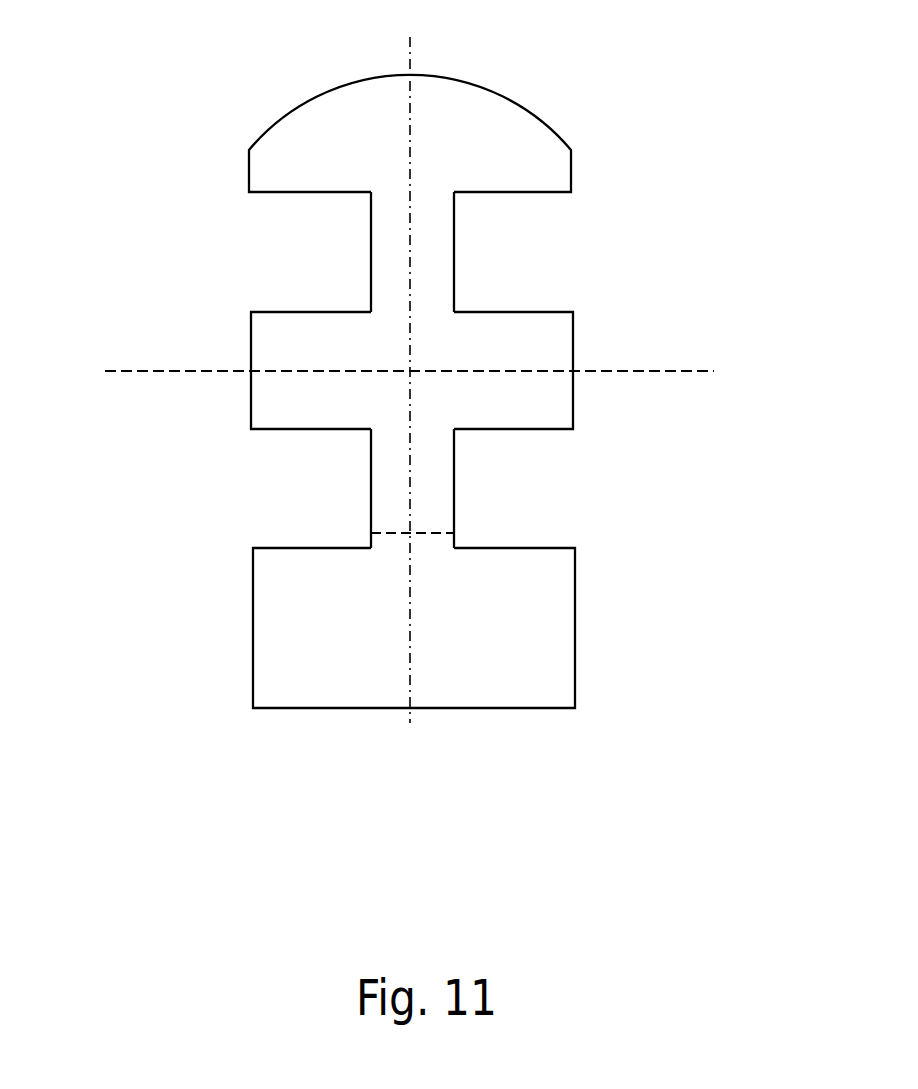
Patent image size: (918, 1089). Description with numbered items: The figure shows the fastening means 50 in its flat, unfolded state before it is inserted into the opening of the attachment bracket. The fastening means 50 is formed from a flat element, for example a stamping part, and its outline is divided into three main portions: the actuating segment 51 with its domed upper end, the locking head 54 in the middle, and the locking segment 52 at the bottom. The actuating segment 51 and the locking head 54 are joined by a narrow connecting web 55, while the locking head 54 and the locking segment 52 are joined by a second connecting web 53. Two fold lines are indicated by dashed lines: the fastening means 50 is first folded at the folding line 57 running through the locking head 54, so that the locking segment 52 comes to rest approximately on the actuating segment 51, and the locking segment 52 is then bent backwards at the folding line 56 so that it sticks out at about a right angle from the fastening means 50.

The fastening means 50 is at (139, 215).
The actuating segment 51 is at (482, 120).
The locking segment 52 is at (277, 694).
The connecting web 53 is at (442, 497).
The locking head 54 is at (550, 419).
The connecting web 55 is at (442, 254).
The folding line 56 is at (380, 535).
The folding line 57 is at (537, 368).